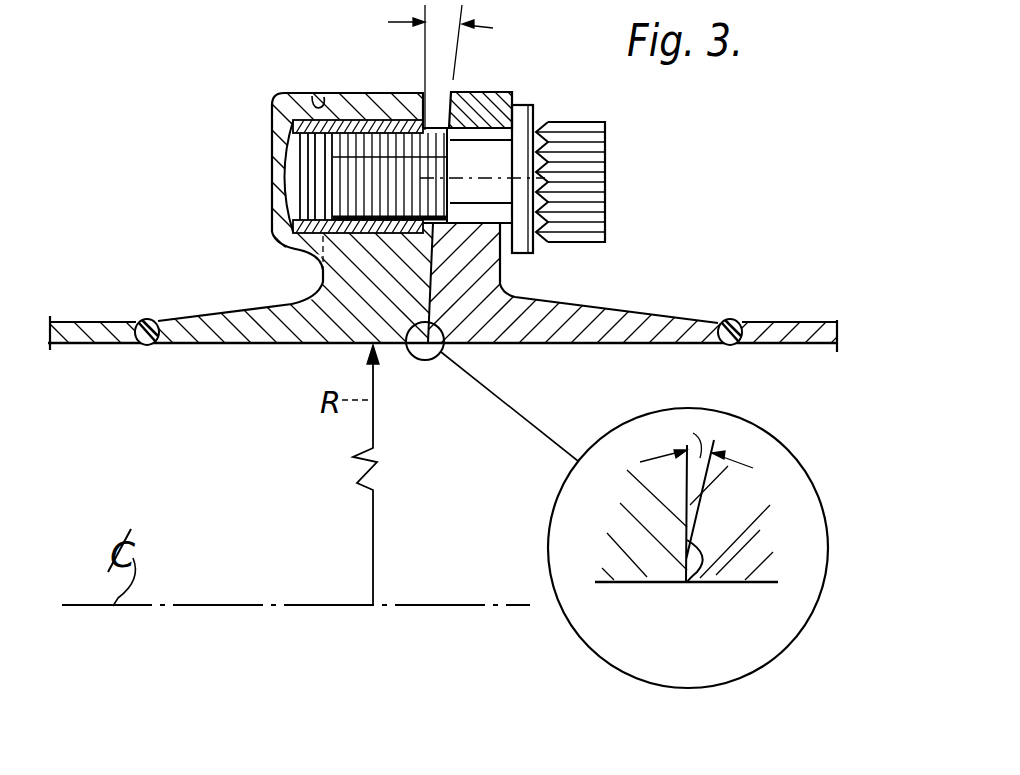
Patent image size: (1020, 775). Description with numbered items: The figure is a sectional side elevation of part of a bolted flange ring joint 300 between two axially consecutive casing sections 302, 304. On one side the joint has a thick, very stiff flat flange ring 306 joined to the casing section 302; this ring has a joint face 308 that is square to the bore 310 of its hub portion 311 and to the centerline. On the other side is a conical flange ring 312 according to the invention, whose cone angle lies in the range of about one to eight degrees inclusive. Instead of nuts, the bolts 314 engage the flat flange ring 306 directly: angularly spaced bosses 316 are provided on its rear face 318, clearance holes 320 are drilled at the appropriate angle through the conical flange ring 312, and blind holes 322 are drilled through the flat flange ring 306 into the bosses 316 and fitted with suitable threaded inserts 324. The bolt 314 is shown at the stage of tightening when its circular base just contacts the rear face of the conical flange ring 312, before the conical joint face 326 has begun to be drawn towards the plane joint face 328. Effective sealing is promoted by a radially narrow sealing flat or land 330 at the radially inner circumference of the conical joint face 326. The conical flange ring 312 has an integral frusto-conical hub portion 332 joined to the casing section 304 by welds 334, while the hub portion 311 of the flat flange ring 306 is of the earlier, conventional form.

The joint 300 is at (248, 97).
The casing section 302 is at (118, 288).
The casing section 304 is at (793, 330).
The flat flange ring 306 is at (343, 100).
The joint face 308 is at (427, 102).
The bore 310 is at (208, 348).
The hub portion 311 is at (280, 348).
The conical flange ring 312 is at (474, 100).
The bolt 314 is at (470, 162).
The boss 316 is at (272, 125).
The rear face 318 is at (316, 98).
The clearance hole 320 is at (511, 105).
The blind hole 322 is at (270, 190).
The threaded insert 324 is at (275, 246).
The conical joint face 326 is at (440, 247).
The plane joint face 328 is at (425, 258).
The sealing land 330 is at (424, 361).
The frusto-conical hub portion 332 is at (520, 330).
The weld 334 is at (742, 291).